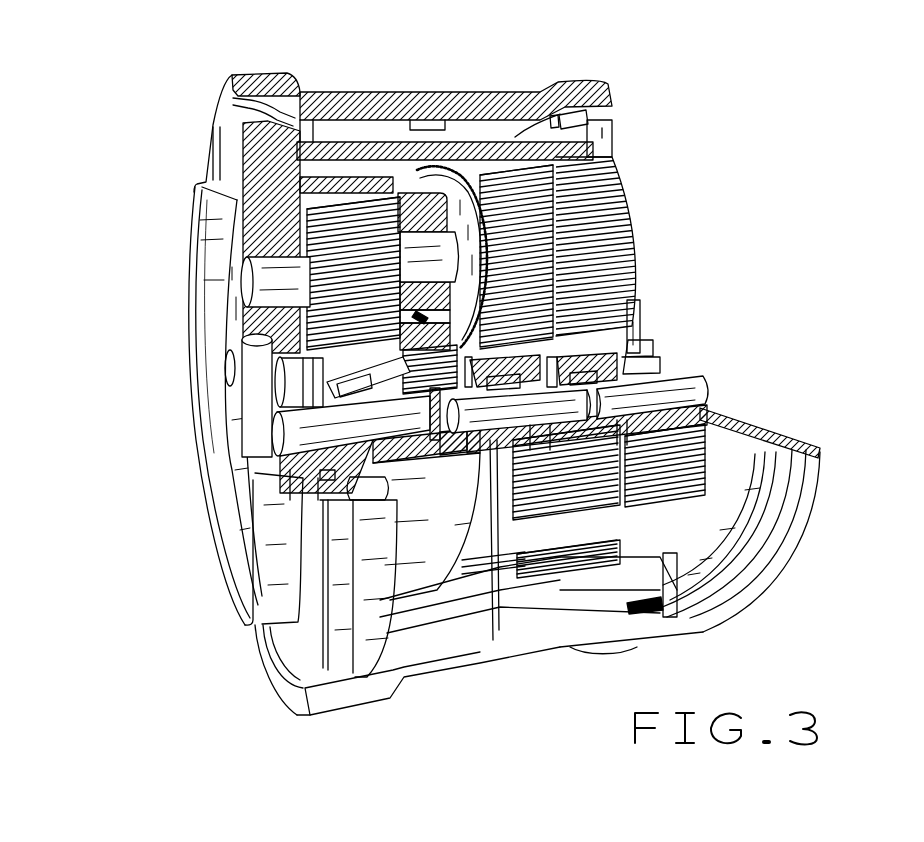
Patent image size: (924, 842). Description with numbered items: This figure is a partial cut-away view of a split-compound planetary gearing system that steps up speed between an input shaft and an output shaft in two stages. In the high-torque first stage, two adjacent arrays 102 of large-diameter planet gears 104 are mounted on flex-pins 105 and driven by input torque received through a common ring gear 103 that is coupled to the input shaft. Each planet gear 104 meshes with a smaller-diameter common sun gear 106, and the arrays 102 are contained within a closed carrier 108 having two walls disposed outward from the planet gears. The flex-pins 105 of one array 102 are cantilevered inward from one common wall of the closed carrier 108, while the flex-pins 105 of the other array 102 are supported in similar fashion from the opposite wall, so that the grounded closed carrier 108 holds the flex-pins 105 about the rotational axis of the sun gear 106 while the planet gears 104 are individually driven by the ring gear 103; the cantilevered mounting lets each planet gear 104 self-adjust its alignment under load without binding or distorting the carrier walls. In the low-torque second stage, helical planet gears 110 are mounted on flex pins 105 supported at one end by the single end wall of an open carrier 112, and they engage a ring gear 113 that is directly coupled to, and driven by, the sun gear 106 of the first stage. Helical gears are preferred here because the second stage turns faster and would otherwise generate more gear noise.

The arrays of large-diameter planet gears 102 is at (612, 74).
The common ring gear 103 is at (597, 583).
The planet gears 104 is at (507, 211).
The flex-pins 105 is at (617, 262).
The common sun gear 106 is at (580, 347).
The closed carrier 108 is at (412, 205).
The planet gears 110 is at (245, 245).
The open carrier 112 is at (263, 160).
The ring gear 113 is at (340, 177).